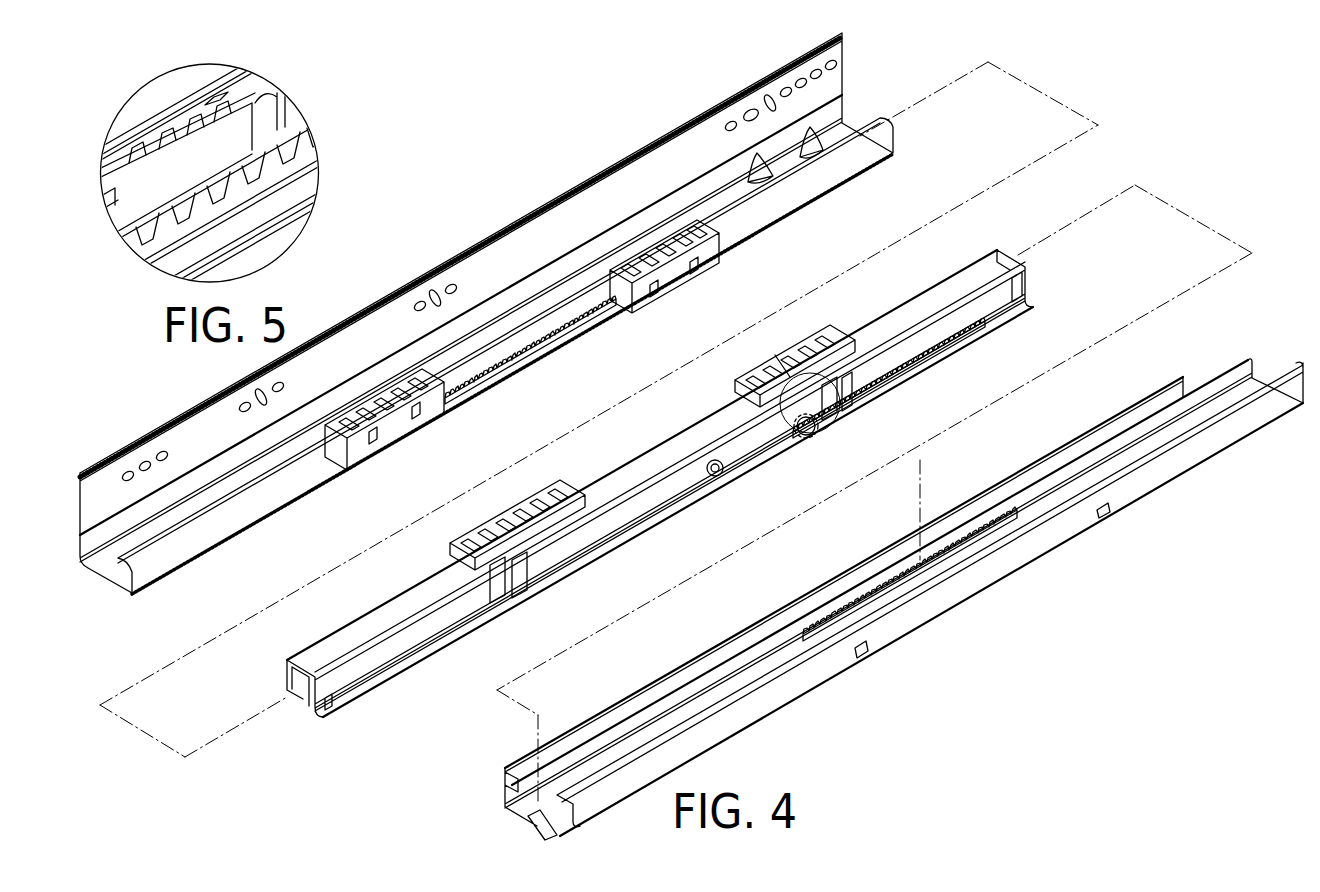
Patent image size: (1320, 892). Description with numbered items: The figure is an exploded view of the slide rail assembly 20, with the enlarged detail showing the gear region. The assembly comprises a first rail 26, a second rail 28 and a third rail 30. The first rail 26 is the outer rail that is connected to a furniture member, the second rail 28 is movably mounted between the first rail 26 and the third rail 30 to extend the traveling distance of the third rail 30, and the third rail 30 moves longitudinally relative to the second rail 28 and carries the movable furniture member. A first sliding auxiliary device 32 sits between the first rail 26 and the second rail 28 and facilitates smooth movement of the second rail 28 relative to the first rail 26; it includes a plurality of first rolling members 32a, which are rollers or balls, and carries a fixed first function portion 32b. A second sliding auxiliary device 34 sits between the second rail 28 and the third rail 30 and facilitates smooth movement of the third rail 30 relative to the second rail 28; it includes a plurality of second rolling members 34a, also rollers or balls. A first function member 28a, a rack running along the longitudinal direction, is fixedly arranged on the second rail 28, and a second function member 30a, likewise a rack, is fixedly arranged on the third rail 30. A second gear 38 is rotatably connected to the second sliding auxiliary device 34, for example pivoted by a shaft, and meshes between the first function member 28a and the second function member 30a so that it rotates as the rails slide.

In FIG. 4, the slide rail assembly 20 is at (1138, 138).
In FIG. 4, the first rail 26 is at (121, 588).
In FIG. 4, the second rail 28 is at (310, 703).
In FIG. 4, the first function member 28a is at (940, 348).
In FIG. 5, the first function member 28a is at (212, 193).
In FIG. 4, the third rail 30 is at (504, 812).
In FIG. 4, the second function member 30a is at (977, 530).
In FIG. 4, the first sliding auxiliary device 32 is at (534, 284).
In FIG. 4, the first rolling members 32a is at (675, 225).
In FIG. 4, the first function portion 32b is at (545, 345).
In FIG. 4, the second sliding auxiliary device 34 is at (652, 472).
In FIG. 4, the second rolling members 34a is at (815, 347).
In FIG. 4, the second gear 38 is at (803, 438).
In FIG. 5, the second gear 38 is at (178, 113).